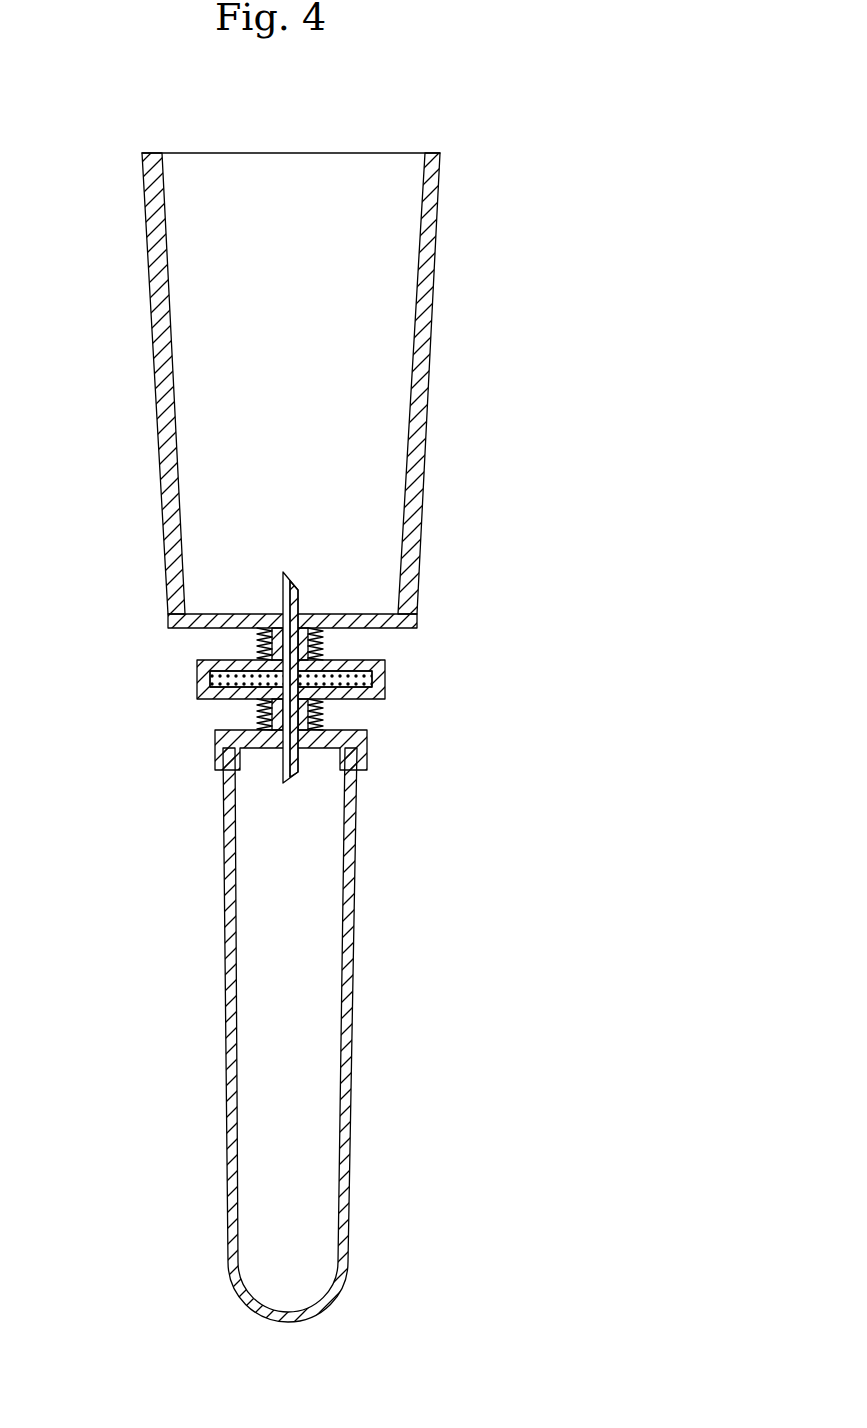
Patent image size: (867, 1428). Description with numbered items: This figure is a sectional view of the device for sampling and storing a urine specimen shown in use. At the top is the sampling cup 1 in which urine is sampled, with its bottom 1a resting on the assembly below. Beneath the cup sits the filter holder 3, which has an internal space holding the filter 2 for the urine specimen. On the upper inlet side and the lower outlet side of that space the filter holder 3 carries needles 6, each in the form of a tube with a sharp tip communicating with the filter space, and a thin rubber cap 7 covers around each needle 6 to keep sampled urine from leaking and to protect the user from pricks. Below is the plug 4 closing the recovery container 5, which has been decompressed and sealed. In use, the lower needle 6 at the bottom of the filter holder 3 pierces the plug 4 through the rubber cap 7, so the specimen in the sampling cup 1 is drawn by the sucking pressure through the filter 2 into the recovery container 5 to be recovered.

The sampling cup 1 is at (430, 368).
The cup bottom 1a is at (393, 628).
The filter 2 is at (213, 677).
The filter holder 3 is at (390, 678).
The plug 4 is at (355, 728).
The recovery container 5 is at (360, 1020).
The needle 6 is at (283, 590).
The rubber cap 7 is at (262, 643).